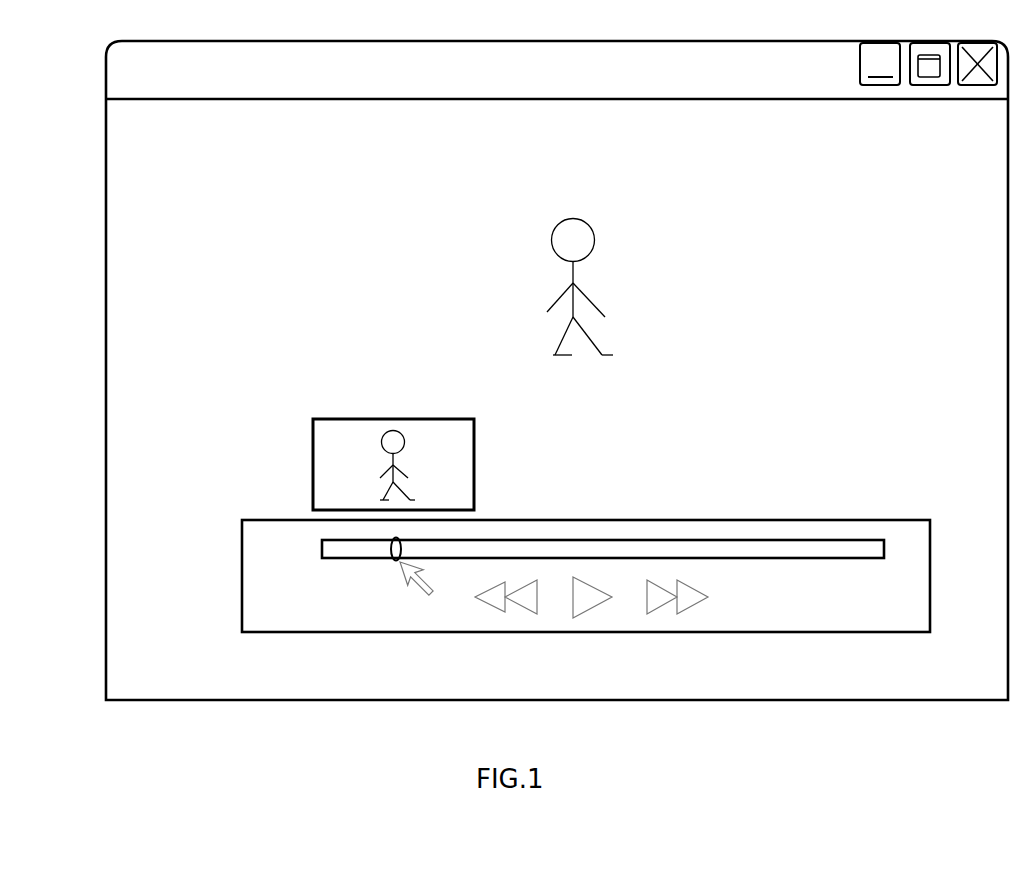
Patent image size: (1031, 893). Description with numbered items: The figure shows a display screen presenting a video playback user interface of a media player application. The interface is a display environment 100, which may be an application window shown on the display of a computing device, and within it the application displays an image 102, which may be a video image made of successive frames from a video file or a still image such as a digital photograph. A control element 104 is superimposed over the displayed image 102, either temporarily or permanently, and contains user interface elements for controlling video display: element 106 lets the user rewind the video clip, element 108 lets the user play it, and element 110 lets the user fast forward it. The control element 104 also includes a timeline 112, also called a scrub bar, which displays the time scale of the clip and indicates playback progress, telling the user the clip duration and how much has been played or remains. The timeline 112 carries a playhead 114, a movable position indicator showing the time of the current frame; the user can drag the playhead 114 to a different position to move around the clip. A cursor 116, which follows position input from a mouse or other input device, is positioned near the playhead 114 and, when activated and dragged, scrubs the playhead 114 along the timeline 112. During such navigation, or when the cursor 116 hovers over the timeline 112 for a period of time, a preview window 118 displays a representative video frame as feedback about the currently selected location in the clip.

The display environment 100 is at (70, 127).
The image 102 is at (268, 248).
The control element 104 is at (214, 541).
The user interface element 106 is at (512, 619).
The user interface element 108 is at (594, 620).
The user interface element 110 is at (661, 620).
The timeline 112 is at (894, 547).
The playhead 114 is at (387, 573).
The cursor 116 is at (406, 596).
The preview window 118 is at (504, 478).